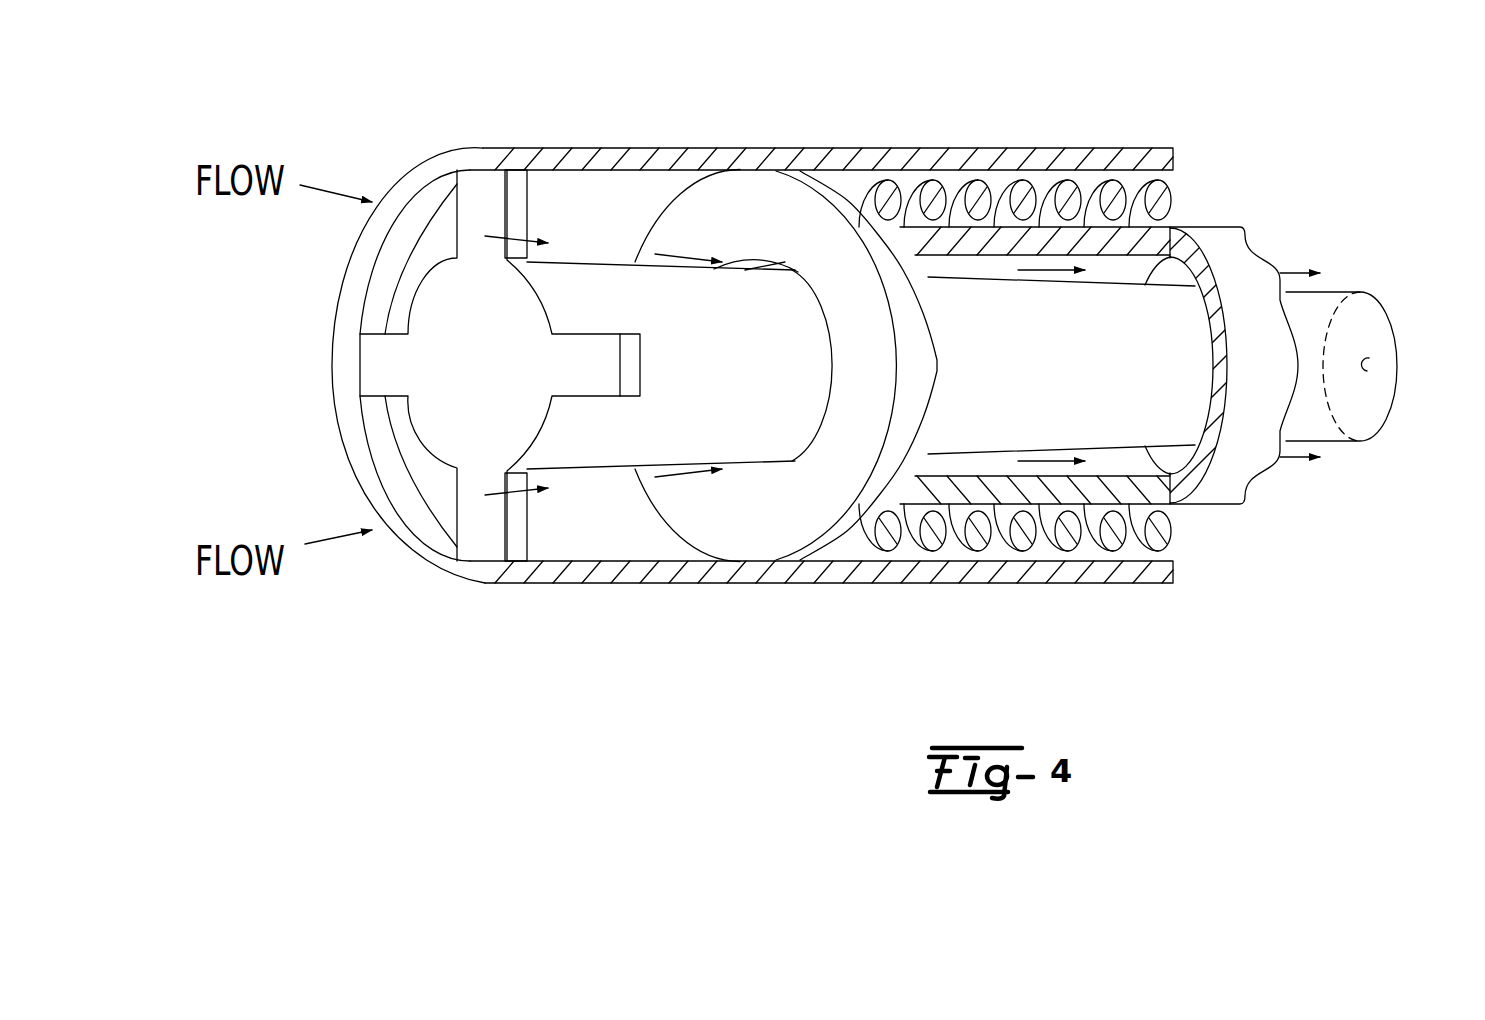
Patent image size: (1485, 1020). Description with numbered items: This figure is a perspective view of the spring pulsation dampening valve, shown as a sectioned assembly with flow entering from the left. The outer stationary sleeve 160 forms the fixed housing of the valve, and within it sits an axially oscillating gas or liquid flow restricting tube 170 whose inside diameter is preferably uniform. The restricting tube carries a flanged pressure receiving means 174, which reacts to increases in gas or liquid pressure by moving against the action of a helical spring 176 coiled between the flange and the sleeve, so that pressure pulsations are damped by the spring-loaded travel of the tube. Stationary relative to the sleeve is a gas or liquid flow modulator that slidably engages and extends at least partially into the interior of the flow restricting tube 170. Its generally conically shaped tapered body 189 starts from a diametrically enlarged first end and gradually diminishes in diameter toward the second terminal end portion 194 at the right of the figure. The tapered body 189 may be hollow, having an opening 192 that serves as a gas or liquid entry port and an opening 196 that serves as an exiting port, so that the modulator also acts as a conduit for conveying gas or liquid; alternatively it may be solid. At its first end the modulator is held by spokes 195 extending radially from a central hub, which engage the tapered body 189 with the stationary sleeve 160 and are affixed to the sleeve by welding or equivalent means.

The outer stationary sleeve 160 is at (643, 150).
The flanged pressure receiving means 174 is at (768, 190).
The helical spring 176 is at (1160, 185).
The gas or liquid flow restricting tube 170 is at (975, 268).
The tapered body 189 is at (625, 262).
The opening 192 is at (482, 356).
The second terminal end portion 194 is at (1382, 306).
The spokes 195 is at (485, 190).
The opening 196 is at (1369, 371).